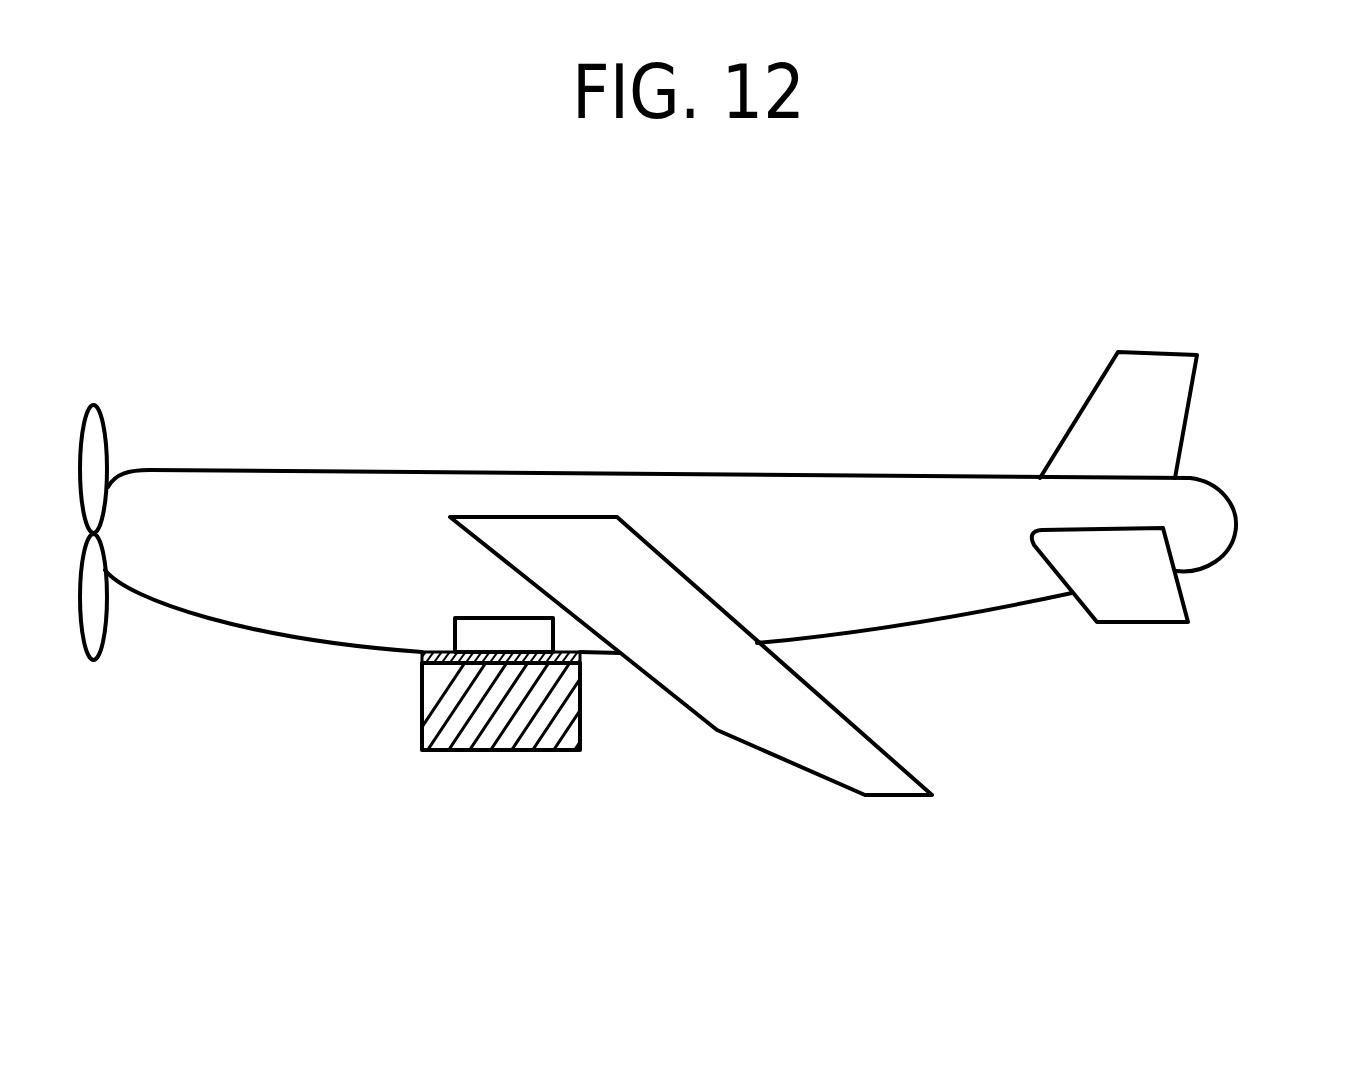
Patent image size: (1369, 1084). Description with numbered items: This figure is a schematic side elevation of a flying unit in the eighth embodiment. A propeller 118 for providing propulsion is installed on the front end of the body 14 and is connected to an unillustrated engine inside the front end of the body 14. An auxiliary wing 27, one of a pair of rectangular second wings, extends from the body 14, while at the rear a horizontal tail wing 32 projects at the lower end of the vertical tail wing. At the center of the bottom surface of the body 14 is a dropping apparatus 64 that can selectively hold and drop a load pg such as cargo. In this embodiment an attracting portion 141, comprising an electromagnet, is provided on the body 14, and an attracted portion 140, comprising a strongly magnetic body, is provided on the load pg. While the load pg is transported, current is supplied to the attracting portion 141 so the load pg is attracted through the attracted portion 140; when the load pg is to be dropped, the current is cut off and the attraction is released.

The body 14 is at (873, 522).
The propeller 118 is at (103, 423).
The auxiliary wing 27 is at (775, 723).
The horizontal tail wing 32 is at (1160, 410).
The dropping apparatus 64 is at (463, 604).
The attracting portion 141 is at (513, 617).
The attracted portion 140 is at (463, 715).
The load pg is at (463, 772).